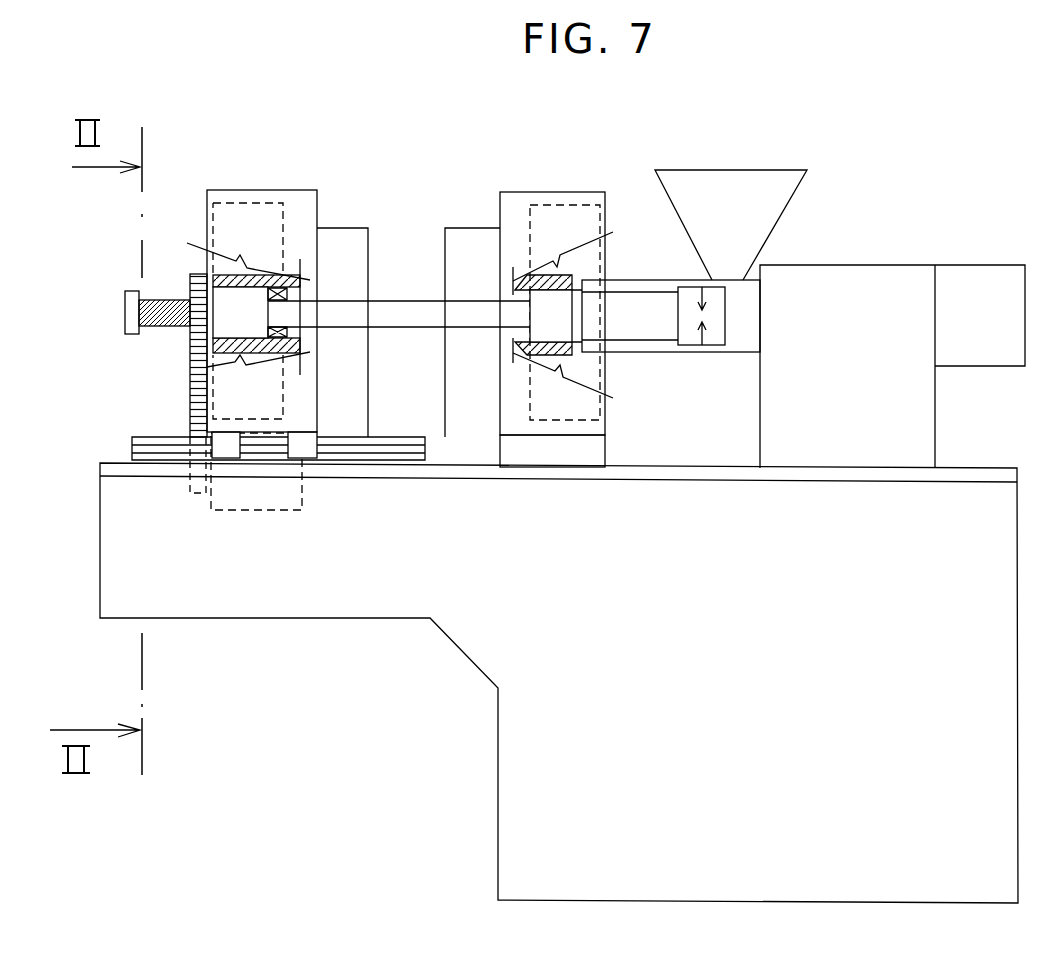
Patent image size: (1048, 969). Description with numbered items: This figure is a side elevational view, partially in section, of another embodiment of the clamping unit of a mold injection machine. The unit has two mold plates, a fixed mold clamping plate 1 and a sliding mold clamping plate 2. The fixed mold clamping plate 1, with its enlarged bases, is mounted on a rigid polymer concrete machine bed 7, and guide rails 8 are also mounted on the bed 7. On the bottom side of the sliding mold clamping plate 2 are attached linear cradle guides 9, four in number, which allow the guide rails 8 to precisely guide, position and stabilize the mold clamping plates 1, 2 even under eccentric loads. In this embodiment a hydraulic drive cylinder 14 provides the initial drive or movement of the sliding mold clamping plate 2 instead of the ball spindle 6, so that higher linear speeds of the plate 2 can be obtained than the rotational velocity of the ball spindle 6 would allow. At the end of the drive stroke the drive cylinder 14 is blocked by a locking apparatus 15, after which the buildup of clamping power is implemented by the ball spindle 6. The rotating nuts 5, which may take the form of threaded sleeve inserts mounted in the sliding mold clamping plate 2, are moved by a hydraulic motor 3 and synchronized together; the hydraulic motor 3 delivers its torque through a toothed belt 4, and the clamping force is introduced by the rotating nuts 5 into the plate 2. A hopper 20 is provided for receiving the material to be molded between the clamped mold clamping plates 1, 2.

The fixed mold clamping plate 1 is at (553, 222).
The sliding mold clamping plate 2 is at (245, 210).
The hydraulic motor 3 is at (240, 492).
The toothed belt 4 is at (198, 383).
The rotating nuts 5 is at (233, 298).
The ball spindle 6 is at (153, 305).
The machine bed 7 is at (922, 632).
The guide rails 8 is at (380, 455).
The linear cradle guides 9 is at (300, 448).
The hydraulic drive cylinder 14 is at (632, 323).
The locking apparatus 15 is at (707, 346).
The hopper 20 is at (748, 155).